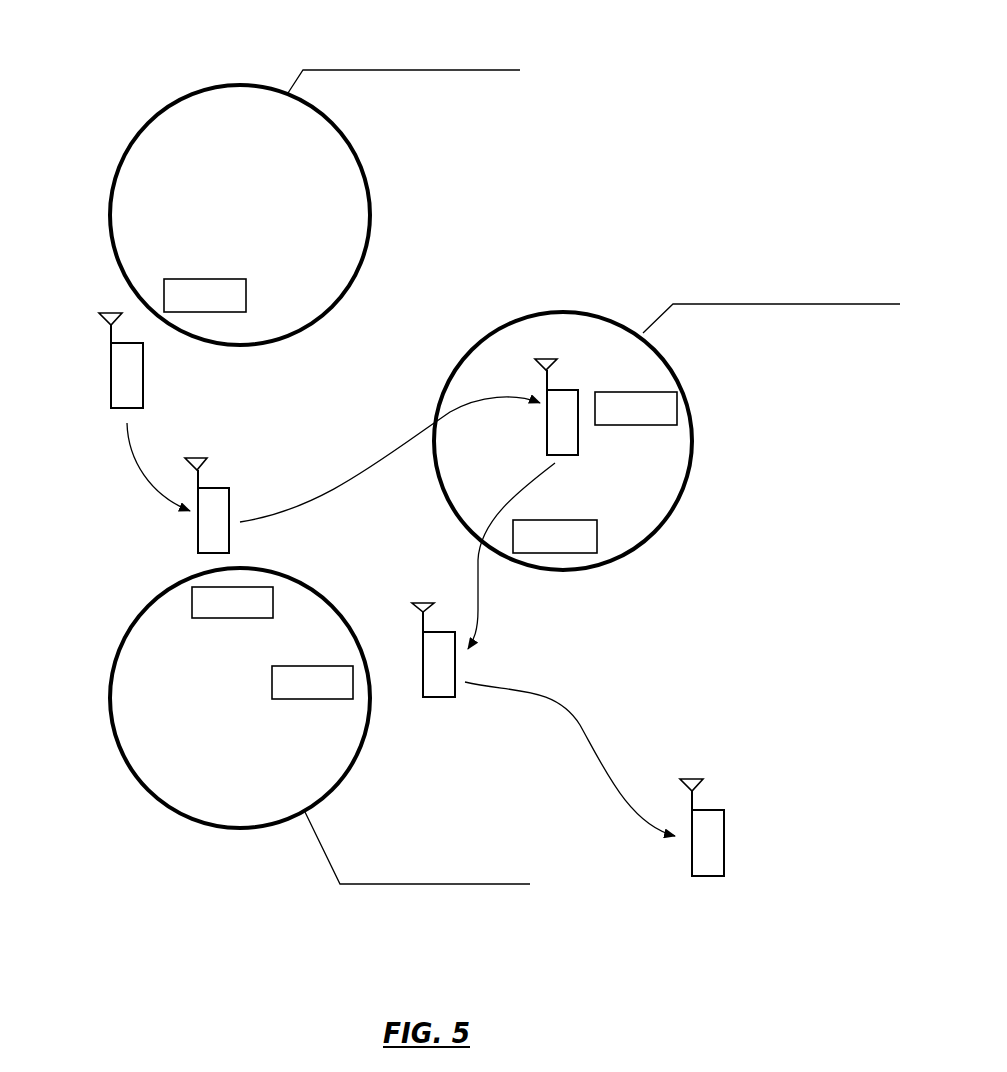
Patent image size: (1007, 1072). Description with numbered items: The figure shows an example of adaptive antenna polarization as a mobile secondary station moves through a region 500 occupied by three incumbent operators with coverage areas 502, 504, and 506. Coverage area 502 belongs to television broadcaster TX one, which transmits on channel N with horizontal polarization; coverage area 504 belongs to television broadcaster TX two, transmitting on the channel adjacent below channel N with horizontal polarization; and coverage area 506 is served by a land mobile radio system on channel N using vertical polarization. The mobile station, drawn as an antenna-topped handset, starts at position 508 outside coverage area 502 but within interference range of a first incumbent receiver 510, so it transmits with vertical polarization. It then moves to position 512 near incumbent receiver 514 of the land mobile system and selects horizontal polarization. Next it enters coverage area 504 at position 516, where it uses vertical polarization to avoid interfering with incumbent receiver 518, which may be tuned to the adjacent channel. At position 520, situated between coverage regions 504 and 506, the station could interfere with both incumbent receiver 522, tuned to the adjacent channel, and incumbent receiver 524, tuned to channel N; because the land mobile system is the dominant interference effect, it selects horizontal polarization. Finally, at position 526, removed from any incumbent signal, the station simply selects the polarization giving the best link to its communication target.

The region 500 is at (882, 28).
The coverage area 502 is at (367, 177).
The coverage area 504 is at (690, 413).
The coverage area 506 is at (118, 648).
The position 508 is at (111, 383).
The first incumbent receiver 510 is at (203, 312).
The position 512 is at (230, 497).
The incumbent receiver 514 is at (232, 618).
The position 516 is at (572, 390).
The incumbent receiver 518 is at (647, 425).
The position 520 is at (442, 697).
The incumbent receiver 522 is at (538, 553).
The incumbent receiver 524 is at (312, 666).
The position 526 is at (724, 851).